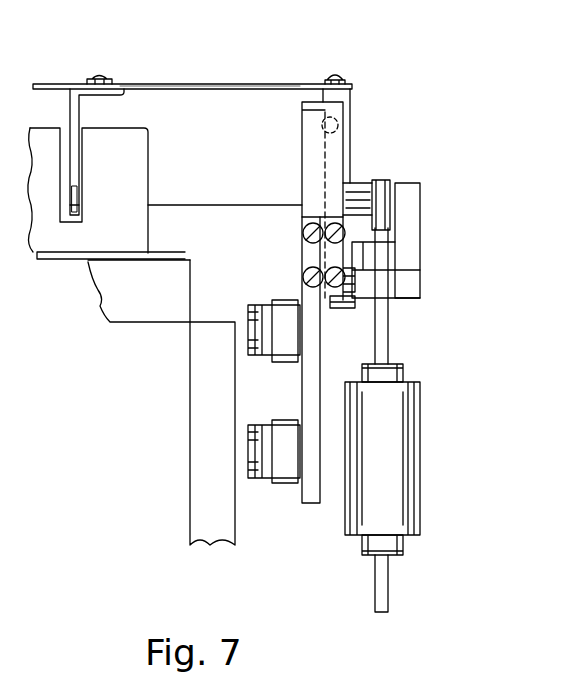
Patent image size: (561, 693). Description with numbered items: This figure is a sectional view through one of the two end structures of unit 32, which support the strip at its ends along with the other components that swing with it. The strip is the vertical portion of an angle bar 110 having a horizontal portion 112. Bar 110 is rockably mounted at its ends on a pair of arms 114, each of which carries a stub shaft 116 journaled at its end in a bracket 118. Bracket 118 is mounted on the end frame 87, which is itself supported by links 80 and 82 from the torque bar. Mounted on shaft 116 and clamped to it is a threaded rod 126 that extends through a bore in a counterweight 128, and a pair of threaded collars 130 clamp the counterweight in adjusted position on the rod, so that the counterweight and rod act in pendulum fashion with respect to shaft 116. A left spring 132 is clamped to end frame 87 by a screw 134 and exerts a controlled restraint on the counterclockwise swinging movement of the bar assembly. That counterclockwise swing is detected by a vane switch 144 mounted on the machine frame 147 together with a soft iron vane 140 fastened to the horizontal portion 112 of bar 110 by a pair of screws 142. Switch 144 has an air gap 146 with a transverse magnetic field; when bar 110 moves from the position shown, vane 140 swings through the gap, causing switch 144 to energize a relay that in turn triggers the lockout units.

The unit 32 is at (376, 36).
The link 80 is at (280, 302).
The link 82 is at (283, 423).
The end frame 87 is at (322, 382).
The angle bar 110 is at (274, 76).
The horizontal portion 112 is at (213, 84).
The arm 114 is at (345, 100).
The stub shaft 116 is at (360, 198).
The bracket 118 is at (412, 206).
The threaded rod 126 is at (390, 327).
The counterweight 128 is at (418, 456).
The threaded collar 130 is at (405, 371).
The left spring 132 is at (335, 152).
The screw 134 is at (306, 270).
The soft iron vane 140 is at (80, 112).
The screw 142 is at (100, 77).
The vane switch 144 is at (157, 174).
The air gap 146 is at (74, 216).
The machine frame 147 is at (165, 275).